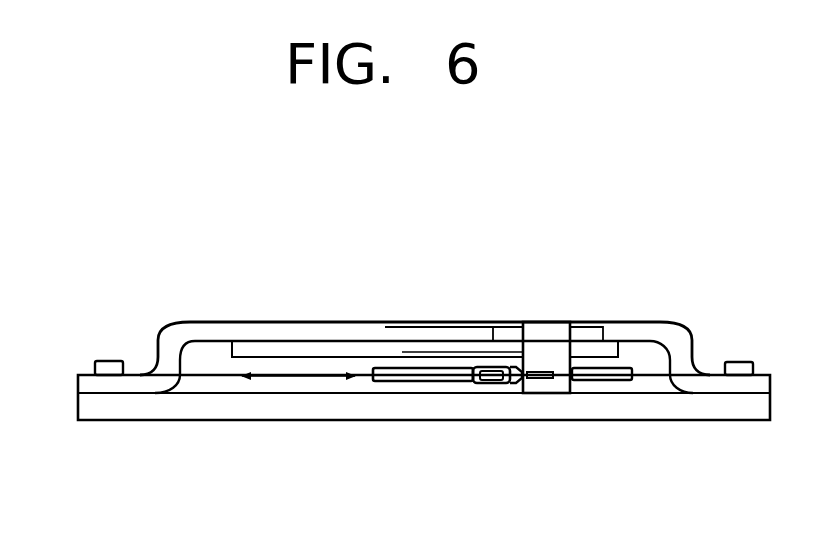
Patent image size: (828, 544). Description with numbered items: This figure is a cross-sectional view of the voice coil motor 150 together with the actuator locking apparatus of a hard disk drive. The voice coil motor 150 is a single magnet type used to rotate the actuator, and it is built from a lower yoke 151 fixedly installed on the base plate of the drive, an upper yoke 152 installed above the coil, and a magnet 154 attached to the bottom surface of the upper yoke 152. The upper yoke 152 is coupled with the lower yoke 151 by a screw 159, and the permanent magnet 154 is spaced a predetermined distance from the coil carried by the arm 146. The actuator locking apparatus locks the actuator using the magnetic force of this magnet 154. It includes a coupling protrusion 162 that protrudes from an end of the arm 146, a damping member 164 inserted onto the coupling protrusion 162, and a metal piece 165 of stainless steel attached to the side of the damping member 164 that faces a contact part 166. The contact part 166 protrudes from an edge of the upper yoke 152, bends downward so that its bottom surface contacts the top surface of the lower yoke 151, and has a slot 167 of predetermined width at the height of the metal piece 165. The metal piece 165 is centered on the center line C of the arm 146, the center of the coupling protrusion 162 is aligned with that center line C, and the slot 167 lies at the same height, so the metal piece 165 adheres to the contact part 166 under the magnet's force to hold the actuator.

The voice coil motor 150 is at (160, 306).
The lower yoke 151 is at (223, 408).
The upper yoke 152 is at (222, 330).
The magnet 154 is at (308, 348).
The arm 146 is at (385, 368).
The screw 159 is at (112, 361).
The coupling protrusion 162 is at (485, 383).
The damping member 164 is at (474, 343).
The metal piece 165 is at (522, 341).
The contact part 166 is at (559, 331).
The slot 167 is at (538, 382).
The center line C is at (640, 378).